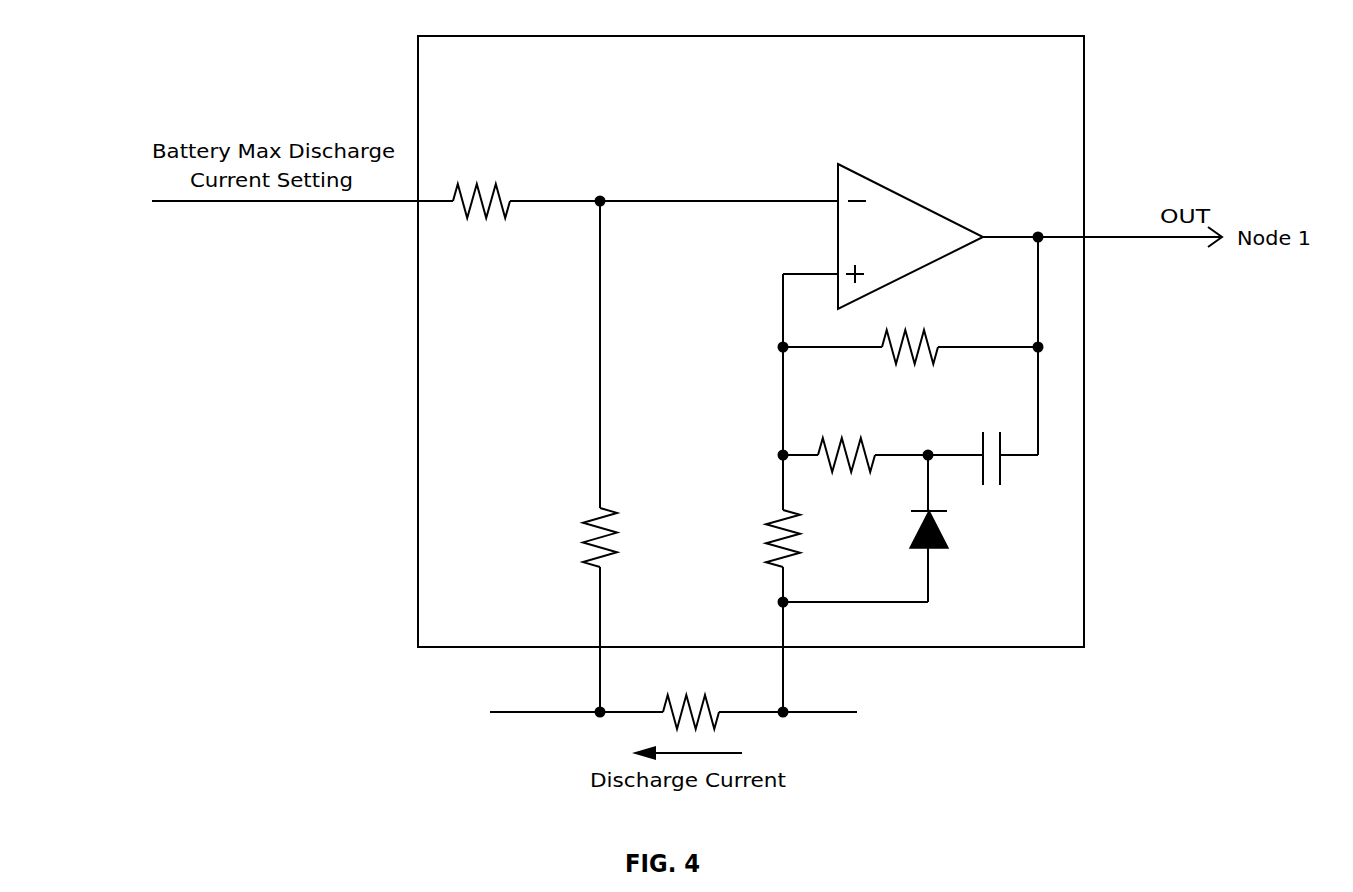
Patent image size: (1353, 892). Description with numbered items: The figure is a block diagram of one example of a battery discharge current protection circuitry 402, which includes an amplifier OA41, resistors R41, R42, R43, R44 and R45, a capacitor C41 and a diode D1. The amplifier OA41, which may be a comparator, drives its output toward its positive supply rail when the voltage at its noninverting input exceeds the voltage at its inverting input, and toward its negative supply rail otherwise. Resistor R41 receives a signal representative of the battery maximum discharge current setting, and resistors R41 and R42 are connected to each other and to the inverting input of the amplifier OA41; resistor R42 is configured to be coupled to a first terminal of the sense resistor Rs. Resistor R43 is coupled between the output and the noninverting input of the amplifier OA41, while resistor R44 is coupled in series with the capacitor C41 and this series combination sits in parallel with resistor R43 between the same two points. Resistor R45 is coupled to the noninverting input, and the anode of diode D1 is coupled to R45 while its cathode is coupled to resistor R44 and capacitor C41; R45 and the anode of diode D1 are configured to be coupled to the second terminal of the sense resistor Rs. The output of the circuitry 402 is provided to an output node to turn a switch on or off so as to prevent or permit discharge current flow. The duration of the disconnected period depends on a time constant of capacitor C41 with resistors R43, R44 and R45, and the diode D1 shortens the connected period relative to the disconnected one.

The battery discharge current protection circuitry 402 is at (793, 38).
The resistor R41 is at (481, 181).
The resistor R42 is at (627, 537).
The resistor R43 is at (910, 329).
The resistor R44 is at (846, 435).
The resistor R45 is at (811, 538).
The sense resistor Rs is at (691, 697).
The capacitor C41 is at (991, 442).
The diode D1 is at (949, 529).
The amplifier OA41 is at (910, 236).